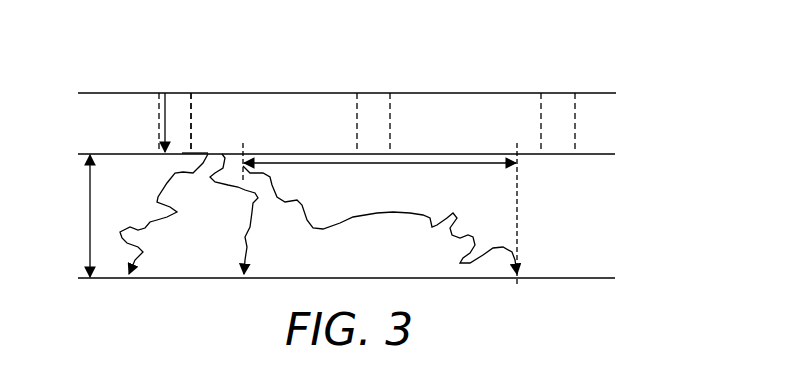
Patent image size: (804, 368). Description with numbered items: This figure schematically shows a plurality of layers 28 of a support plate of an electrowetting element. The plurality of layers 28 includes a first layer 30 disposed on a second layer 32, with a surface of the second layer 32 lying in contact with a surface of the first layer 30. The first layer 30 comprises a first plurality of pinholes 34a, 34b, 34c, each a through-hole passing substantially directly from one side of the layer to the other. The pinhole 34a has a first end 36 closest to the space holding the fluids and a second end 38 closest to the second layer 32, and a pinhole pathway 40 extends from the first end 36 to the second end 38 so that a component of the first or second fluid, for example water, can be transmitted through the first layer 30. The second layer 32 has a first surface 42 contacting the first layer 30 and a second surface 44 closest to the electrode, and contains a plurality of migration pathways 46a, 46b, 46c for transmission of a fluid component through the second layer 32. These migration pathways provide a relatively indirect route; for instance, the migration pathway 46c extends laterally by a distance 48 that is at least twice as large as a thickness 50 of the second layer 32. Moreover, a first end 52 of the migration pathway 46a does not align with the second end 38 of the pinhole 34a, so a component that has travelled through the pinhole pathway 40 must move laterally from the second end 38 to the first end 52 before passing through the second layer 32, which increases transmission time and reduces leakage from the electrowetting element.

The plurality of layers 28 is at (612, 56).
The first layer 30 is at (99, 102).
The second layer 32 is at (603, 215).
The pinhole 34a is at (173, 102).
The pinhole 34b is at (375, 102).
The pinhole 34c is at (559, 102).
The first end 36 is at (189, 93).
The second end 38 is at (182, 153).
The pinhole pathway 40 is at (160, 120).
The first surface 42 is at (592, 155).
The second surface 44 is at (592, 278).
The migration pathway 46a is at (148, 250).
The migration pathway 46b is at (248, 248).
The migration pathway 46c is at (384, 213).
The distance 48 is at (437, 163).
The thickness 50 is at (90, 215).
The first end 52 is at (209, 154).